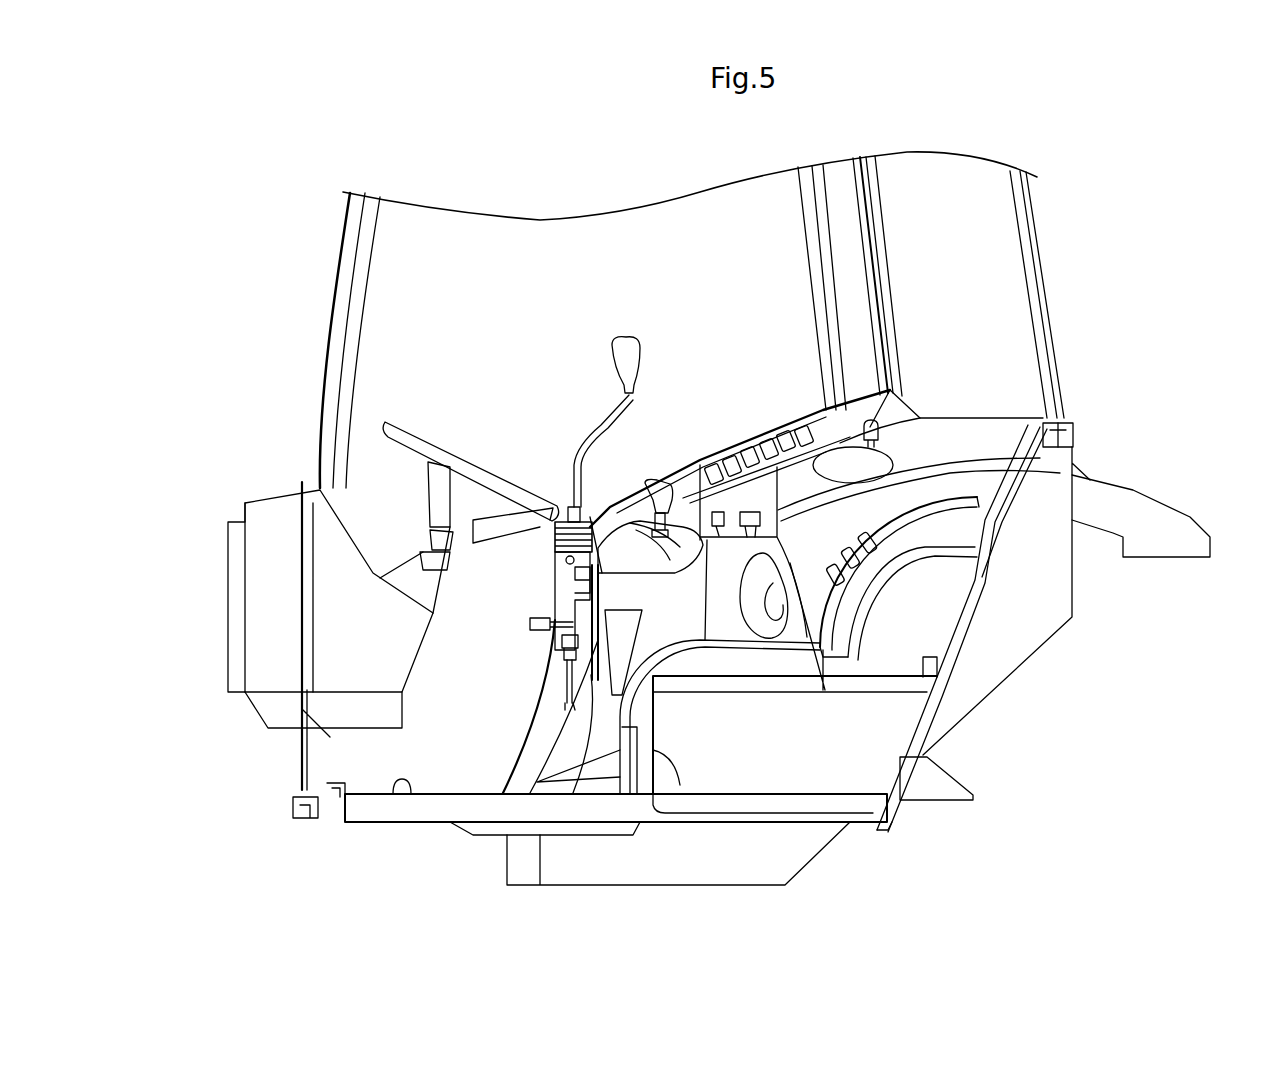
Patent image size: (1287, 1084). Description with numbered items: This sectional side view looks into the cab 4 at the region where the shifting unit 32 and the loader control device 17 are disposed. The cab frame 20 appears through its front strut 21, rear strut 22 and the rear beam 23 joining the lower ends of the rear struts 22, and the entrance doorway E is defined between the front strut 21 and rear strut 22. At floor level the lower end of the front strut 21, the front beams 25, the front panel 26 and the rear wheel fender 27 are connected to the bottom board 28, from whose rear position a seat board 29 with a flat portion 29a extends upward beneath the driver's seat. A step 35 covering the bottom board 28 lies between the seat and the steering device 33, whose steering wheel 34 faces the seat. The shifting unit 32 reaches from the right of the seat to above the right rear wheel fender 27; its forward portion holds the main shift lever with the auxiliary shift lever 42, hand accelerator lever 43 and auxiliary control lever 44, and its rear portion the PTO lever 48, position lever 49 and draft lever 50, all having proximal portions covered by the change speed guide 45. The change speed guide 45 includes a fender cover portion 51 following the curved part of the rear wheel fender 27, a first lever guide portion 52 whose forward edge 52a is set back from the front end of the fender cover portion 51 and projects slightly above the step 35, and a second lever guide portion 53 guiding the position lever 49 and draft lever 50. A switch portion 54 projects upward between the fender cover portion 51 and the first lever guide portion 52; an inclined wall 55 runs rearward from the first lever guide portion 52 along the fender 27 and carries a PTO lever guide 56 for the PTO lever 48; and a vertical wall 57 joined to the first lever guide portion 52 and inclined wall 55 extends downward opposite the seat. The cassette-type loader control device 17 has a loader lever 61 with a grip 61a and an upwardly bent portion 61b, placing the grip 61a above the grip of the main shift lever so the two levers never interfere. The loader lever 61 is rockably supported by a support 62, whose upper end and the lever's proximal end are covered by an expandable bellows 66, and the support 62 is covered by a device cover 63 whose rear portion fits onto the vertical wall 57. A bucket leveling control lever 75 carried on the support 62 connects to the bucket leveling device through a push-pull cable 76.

The cab 4 is at (304, 208).
The loader control device 17 is at (565, 296).
The entrance doorway E is at (671, 240).
The cab frame 20 is at (1063, 283).
The front strut 21 is at (340, 270).
The rear strut 22 is at (847, 223).
The rear beam 23 is at (1068, 437).
The front beam 25 is at (305, 808).
The front panel 26 is at (302, 628).
The rear wheel fender 27 is at (1140, 507).
The bottom board 28 is at (367, 823).
The seat board 29 is at (677, 613).
The flat portion 29a is at (947, 650).
The shifting unit 32 is at (1010, 392).
The steering device 33 is at (327, 552).
The steering wheel 34 is at (416, 425).
The step 35 is at (400, 797).
The auxiliary shift lever 42 is at (677, 613).
The hand accelerator lever 43 is at (692, 567).
The auxiliary control lever 44 is at (848, 822).
The change speed guide 45 is at (957, 507).
The PTO lever 48 is at (876, 422).
The position lever 49 is at (1060, 473).
The draft lever 50 is at (847, 617).
The fender cover portion 51 is at (533, 727).
The first lever guide portion 52 is at (698, 462).
The edge 52a is at (567, 573).
The second lever guide portion 53 is at (933, 603).
The switch portion 54 is at (768, 437).
The inclined wall 55 is at (933, 443).
The PTO lever guide 56 is at (847, 407).
The vertical wall 57 is at (704, 545).
The loader lever 61 is at (581, 390).
The grip 61a is at (623, 337).
The bent portion 61b is at (588, 430).
The support 62 is at (560, 590).
The device cover 63 is at (550, 638).
The bellows 66 is at (590, 505).
The bucket leveling control lever 75 is at (528, 625).
The push-pull cable 76 is at (624, 562).